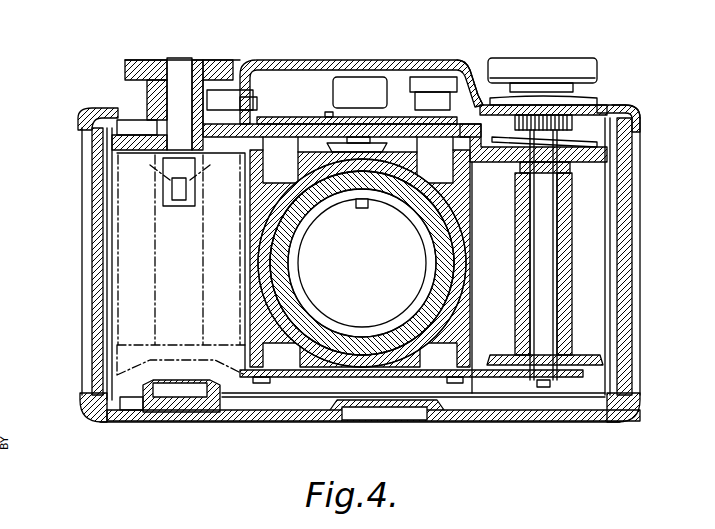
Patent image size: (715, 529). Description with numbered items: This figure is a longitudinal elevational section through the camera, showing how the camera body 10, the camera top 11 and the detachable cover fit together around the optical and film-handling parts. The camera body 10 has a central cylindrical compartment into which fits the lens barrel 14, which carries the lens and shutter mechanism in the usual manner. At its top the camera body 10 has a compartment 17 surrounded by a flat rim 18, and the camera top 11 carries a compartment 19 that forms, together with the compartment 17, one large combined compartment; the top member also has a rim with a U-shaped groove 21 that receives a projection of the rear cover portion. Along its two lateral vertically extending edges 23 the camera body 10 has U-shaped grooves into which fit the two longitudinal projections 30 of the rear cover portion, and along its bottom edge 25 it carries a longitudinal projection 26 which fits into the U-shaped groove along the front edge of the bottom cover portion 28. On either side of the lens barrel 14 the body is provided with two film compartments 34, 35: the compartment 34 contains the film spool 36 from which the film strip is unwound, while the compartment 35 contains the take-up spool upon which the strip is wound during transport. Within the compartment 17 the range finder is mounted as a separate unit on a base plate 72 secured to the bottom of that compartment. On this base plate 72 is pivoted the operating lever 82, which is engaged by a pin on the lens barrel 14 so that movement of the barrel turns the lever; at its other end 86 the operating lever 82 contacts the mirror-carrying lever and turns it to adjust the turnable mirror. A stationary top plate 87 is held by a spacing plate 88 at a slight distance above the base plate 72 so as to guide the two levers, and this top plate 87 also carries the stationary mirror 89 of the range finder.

The camera body 10 is at (600, 197).
The camera top 11 is at (147, 112).
The lens barrel 14 is at (320, 357).
The compartment 17 is at (580, 123).
The flat rim 18 is at (637, 137).
The compartment 19 is at (95, 112).
The U-shaped groove 21 is at (633, 108).
The lateral vertically extending edges 23 is at (630, 218).
The bottom edge 25 is at (83, 292).
The longitudinal projection 26 is at (103, 413).
The bottom cover portion 28 is at (207, 407).
The longitudinal projections 30 is at (108, 343).
The film compartment 34 is at (130, 245).
The film compartment 35 is at (593, 343).
The film spool 36 is at (140, 298).
The base plate 72 is at (280, 124).
The operating lever 82 is at (428, 100).
The end 86 is at (467, 123).
The top plate 87 is at (302, 124).
The spacing plate 88 is at (368, 124).
The stationary mirror 89 is at (437, 100).